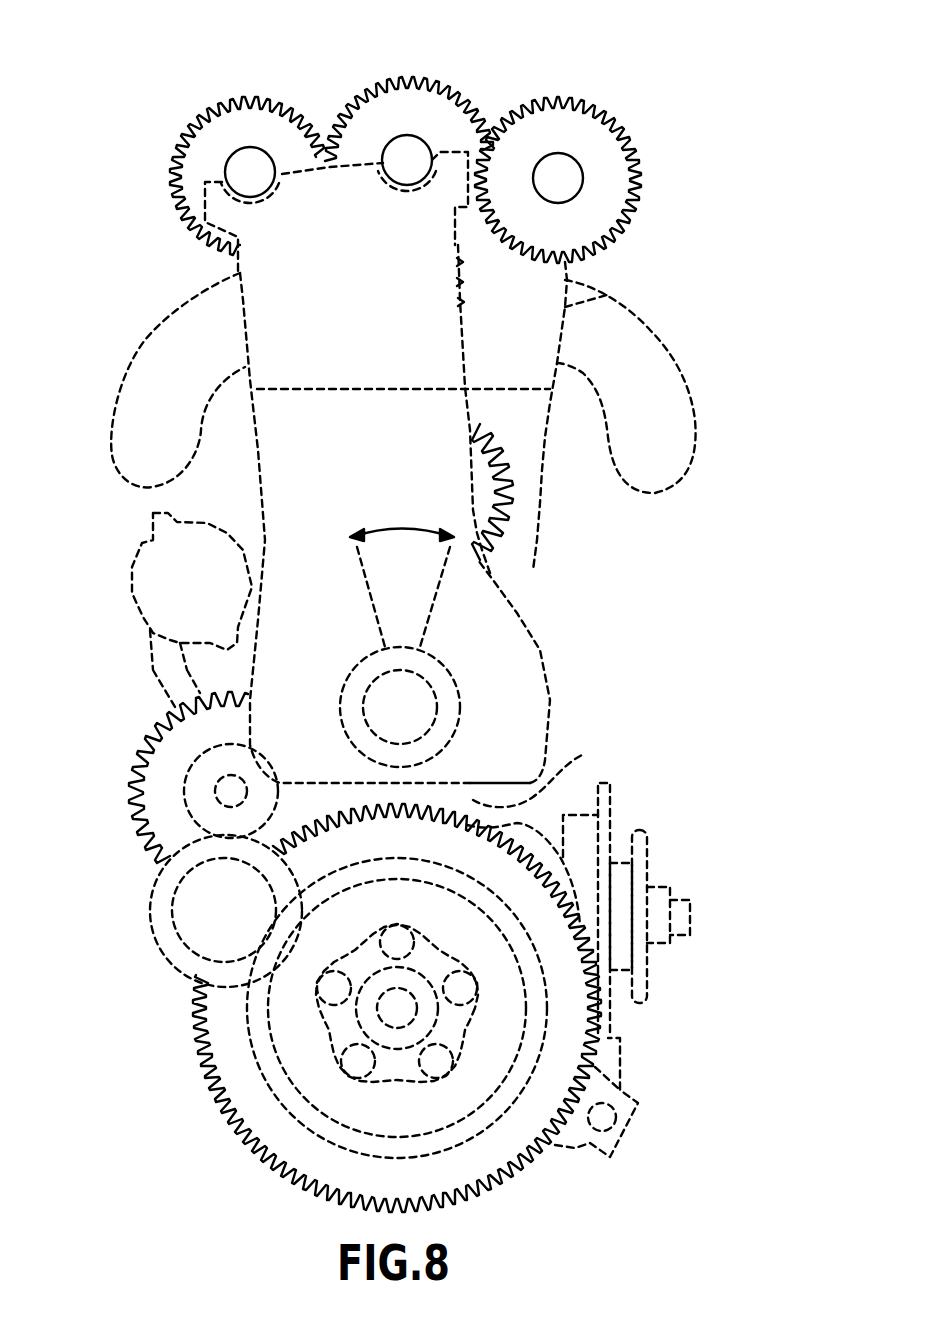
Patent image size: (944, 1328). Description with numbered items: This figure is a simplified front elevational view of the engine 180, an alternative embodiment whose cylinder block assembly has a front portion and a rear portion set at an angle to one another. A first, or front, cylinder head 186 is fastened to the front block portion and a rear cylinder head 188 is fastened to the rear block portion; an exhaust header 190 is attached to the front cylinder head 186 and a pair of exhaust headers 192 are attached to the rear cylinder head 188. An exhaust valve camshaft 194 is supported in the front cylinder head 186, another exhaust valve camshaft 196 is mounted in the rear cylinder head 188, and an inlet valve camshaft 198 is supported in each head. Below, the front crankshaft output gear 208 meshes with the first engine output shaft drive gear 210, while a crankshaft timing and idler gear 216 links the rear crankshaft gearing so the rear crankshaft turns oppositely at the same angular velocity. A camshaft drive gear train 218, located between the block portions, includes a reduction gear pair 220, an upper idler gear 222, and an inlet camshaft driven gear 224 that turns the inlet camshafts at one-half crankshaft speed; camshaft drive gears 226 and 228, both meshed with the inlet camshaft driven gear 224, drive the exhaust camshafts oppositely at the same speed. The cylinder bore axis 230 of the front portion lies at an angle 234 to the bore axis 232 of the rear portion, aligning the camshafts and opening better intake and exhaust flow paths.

The engine 180 is at (575, 639).
The first cylinder head 186 is at (607, 295).
The cylinder head 188 is at (170, 192).
The exhaust header 190 is at (137, 353).
The exhaust headers 192 is at (688, 387).
The exhaust valve camshaft 194 is at (245, 165).
The exhaust valve camshaft 196 is at (568, 182).
The inlet valve camshaft 198 is at (405, 178).
The front crankshaft output gear 208 is at (590, 753).
The first engine output shaft drive gear 210 is at (237, 1110).
The crankshaft timing and idler gear 216 is at (152, 793).
The camshaft drive gear train 218 is at (530, 500).
The reduction gear pair 220 is at (490, 550).
The upper idler gear 222 is at (470, 285).
The inlet camshaft driven gear 224 is at (416, 78).
The camshaft drive gear 226 is at (258, 97).
The camshaft drive gear 228 is at (591, 104).
The cylinder bore axis 230 is at (372, 607).
The bore axis 232 is at (425, 603).
The angle 234 is at (403, 527).